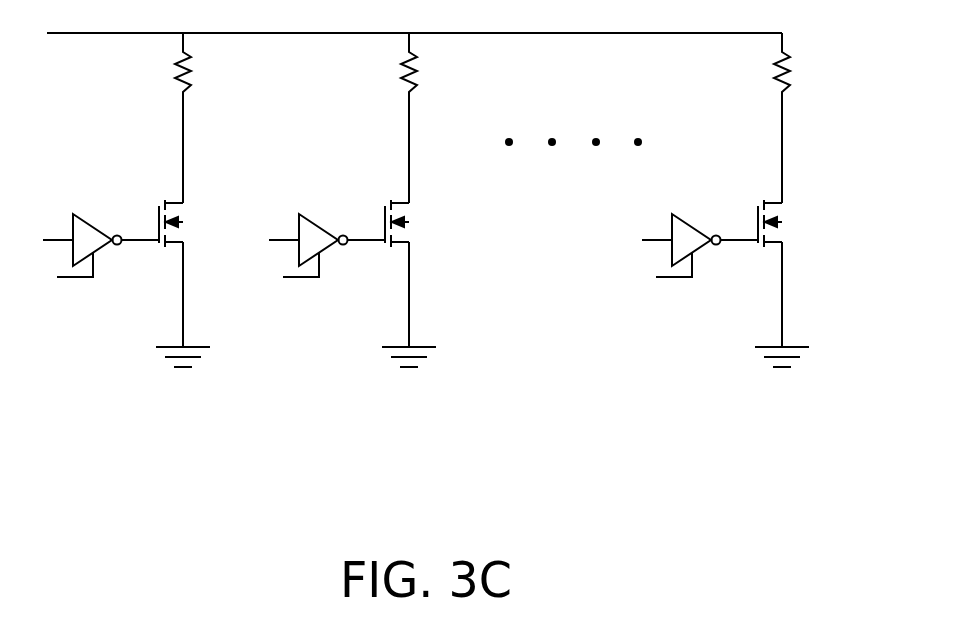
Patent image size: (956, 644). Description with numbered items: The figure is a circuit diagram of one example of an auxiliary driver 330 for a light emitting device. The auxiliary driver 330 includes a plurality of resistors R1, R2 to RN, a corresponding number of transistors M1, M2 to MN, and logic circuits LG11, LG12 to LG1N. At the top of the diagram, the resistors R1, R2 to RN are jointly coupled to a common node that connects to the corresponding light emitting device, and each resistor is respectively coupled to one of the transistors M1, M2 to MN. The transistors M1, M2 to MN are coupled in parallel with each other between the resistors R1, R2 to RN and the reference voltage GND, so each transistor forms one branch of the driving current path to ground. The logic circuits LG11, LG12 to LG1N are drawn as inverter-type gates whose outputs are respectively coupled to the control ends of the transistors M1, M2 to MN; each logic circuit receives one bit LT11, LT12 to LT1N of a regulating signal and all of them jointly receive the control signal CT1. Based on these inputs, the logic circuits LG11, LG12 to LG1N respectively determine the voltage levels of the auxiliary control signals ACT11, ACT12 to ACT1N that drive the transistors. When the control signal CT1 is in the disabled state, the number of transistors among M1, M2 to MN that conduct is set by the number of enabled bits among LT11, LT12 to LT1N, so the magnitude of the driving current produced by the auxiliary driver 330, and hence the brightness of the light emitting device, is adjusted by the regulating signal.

The auxiliary driver 330 is at (435, 235).
The resistor R1 is at (198, 118).
The resistor R2 is at (425, 118).
The resistor RN is at (800, 118).
The transistor M1 is at (187, 213).
The transistor M2 is at (429, 262).
The transistor MN is at (803, 262).
The logic circuit LG11 is at (90, 225).
The logic circuit LG12 is at (334, 214).
The logic circuit LG1N is at (709, 214).
The auxiliary control signal ACT11 is at (143, 245).
The auxiliary control signal ACT12 is at (359, 277).
The auxiliary control signal ACT1N is at (734, 277).
The control signal CT1 is at (38, 238).
The bit of the regulating signal LT11 is at (48, 274).
The bit of the regulating signal LT12 is at (274, 274).
The bit of the regulating signal LT1N is at (647, 274).
The reference voltage GND is at (183, 376).